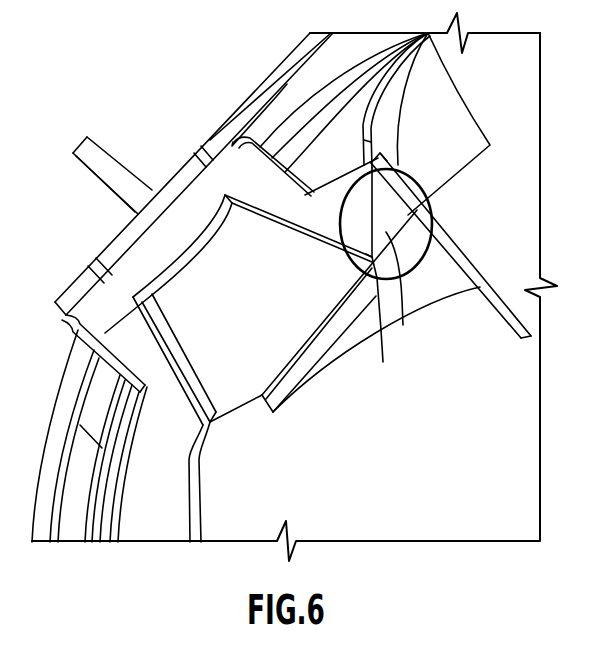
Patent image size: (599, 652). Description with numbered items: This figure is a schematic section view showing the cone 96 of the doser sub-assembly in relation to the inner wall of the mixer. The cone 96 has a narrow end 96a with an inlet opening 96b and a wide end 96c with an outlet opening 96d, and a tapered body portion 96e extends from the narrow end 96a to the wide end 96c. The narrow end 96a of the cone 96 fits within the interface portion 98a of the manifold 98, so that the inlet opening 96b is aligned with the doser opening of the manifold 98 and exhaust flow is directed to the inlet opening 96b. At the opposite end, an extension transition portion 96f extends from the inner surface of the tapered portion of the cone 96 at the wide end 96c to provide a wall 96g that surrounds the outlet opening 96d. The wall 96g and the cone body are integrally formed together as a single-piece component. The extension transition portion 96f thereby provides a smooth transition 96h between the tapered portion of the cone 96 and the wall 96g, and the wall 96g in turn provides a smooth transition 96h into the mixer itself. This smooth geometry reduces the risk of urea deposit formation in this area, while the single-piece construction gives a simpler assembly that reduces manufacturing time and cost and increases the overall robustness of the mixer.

The cone 96 is at (283, 374).
The narrow end 96a is at (97, 343).
The inlet opening 96b is at (165, 252).
The wide end 96c is at (217, 427).
The outlet opening 96d is at (321, 326).
The tapered body portion 96e is at (266, 238).
The extension transition portion 96f is at (382, 350).
The wall 96g is at (403, 325).
The smooth transition 96h is at (419, 273).
The manifold 98 is at (113, 370).
The interface portion 98a is at (213, 162).